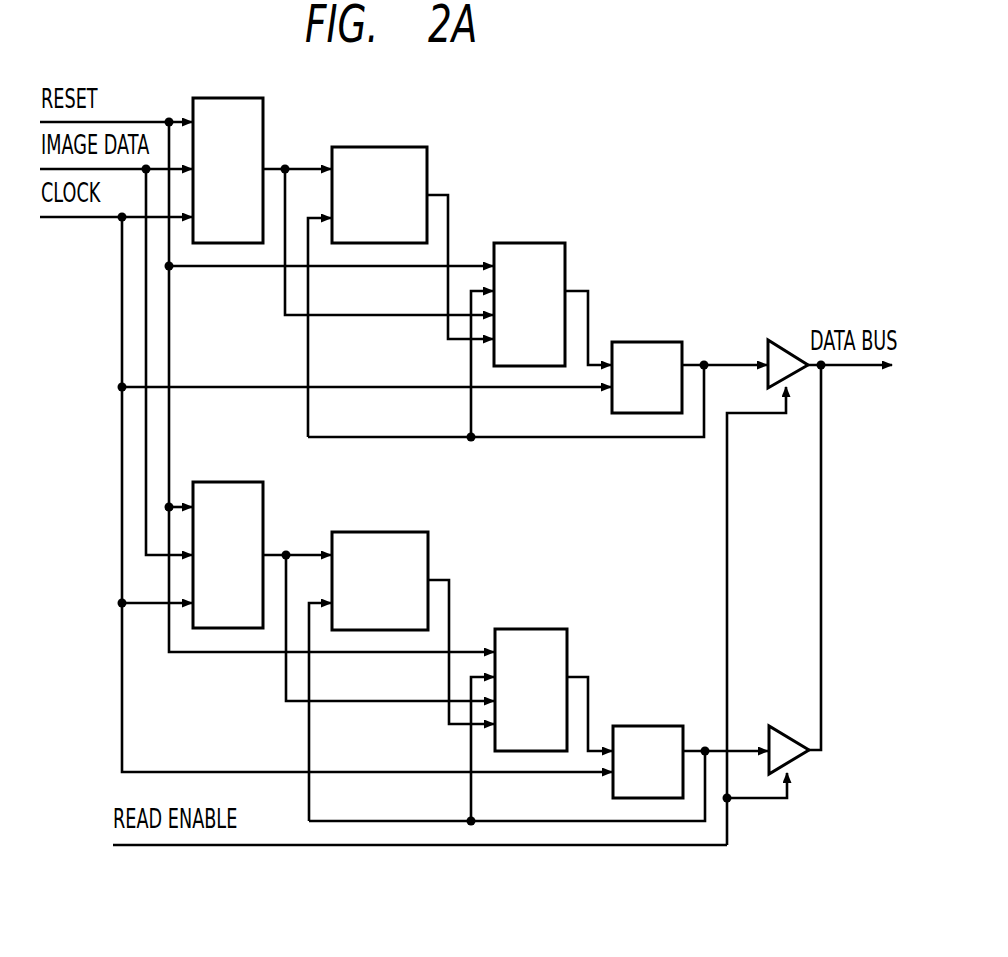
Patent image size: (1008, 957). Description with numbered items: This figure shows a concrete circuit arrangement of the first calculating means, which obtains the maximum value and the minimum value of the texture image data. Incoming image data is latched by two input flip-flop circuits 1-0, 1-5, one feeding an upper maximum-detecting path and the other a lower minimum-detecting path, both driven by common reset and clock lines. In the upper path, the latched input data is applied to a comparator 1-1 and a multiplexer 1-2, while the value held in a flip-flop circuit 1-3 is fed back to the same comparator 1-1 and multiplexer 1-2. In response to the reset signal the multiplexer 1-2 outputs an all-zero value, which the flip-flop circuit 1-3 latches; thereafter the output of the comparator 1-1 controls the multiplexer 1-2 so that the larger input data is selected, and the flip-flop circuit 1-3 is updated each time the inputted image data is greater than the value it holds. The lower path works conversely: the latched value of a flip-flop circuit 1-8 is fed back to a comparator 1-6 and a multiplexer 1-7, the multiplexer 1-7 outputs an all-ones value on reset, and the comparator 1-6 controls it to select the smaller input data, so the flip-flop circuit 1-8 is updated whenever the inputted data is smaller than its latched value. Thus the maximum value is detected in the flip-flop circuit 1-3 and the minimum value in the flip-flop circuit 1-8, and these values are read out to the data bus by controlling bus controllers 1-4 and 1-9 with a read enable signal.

The flip-flop circuit 1-0 is at (218, 98).
The comparator 1-1 is at (384, 147).
The multiplexer 1-2 is at (522, 243).
The flip-flop circuit 1-3 is at (643, 342).
The bus controller 1-4 is at (789, 340).
The flip-flop circuit 1-5 is at (218, 482).
The comparator 1-6 is at (384, 532).
The multiplexer 1-7 is at (523, 629).
The flip-flop circuit 1-8 is at (644, 726).
The bus controller 1-9 is at (786, 726).